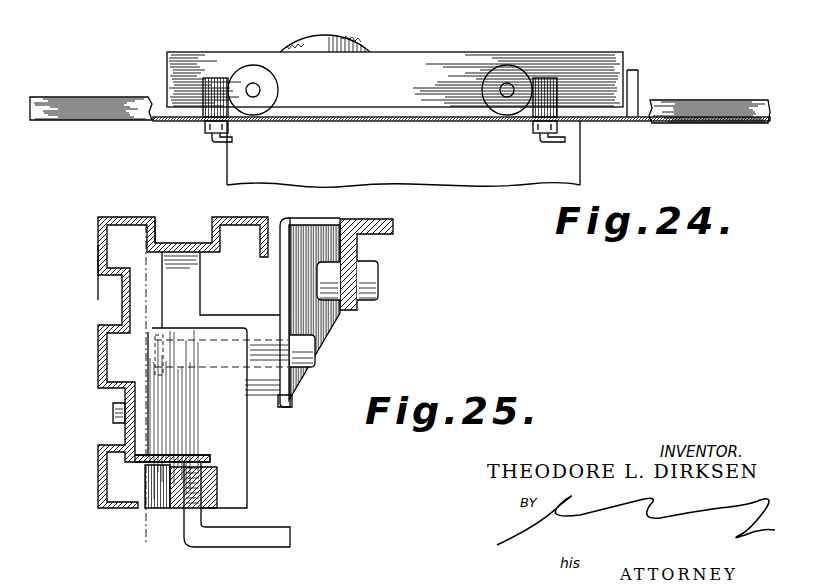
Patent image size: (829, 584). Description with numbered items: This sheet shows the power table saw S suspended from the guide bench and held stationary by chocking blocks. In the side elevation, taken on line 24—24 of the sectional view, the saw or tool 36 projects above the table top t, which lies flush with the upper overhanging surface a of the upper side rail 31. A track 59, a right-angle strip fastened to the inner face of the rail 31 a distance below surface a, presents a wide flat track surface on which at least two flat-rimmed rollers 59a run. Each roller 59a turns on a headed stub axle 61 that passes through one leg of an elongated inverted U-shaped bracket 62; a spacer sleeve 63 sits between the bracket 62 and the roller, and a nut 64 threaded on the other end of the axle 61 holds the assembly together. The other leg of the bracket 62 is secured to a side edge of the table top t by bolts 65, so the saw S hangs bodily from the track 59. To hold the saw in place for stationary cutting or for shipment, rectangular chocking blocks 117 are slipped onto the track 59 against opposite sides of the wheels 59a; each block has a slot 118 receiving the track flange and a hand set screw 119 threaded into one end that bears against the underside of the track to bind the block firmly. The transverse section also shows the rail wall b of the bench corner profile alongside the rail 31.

In FIG. 24, the rotatable saw 36 is at (354, 47).
In FIG. 24, the track 59 is at (703, 107).
In FIG. 25, the track 59 is at (210, 459).
In FIG. 24, the roller 59a is at (250, 72).
In FIG. 25, the roller 59a is at (200, 291).
In FIG. 24, the headed stub axle 61 is at (254, 97).
In FIG. 25, the headed stub axle 61 is at (316, 353).
In FIG. 24, the inverted U-shaped bracket 62 is at (377, 98).
In FIG. 25, the inverted U-shaped bracket 62 is at (306, 223).
In FIG. 25, the spacer sleeve 63 is at (283, 397).
In FIG. 25, the nut 64 is at (307, 375).
In FIG. 25, the bolt 65 is at (379, 272).
In FIG. 24, the chocking block 117 is at (211, 82).
In FIG. 25, the chocking block 117 is at (248, 490).
In FIG. 24, the slot 118 is at (204, 125).
In FIG. 25, the slot 118 is at (148, 468).
In FIG. 24, the hand set screw 119 is at (222, 141).
In FIG. 25, the hand set screw 119 is at (291, 535).
In FIG. 25, the section line 24 is at (153, 255).
In FIG. 25, the upper side rail 31 is at (152, 204).
In FIG. 25, the upper overhanging surface a is at (107, 216).
In FIG. 25, the table side wall b is at (98, 240).
In FIG. 24, the table top t is at (618, 53).
In FIG. 25, the table top t is at (393, 229).
In FIG. 24, the power table saw S is at (573, 163).